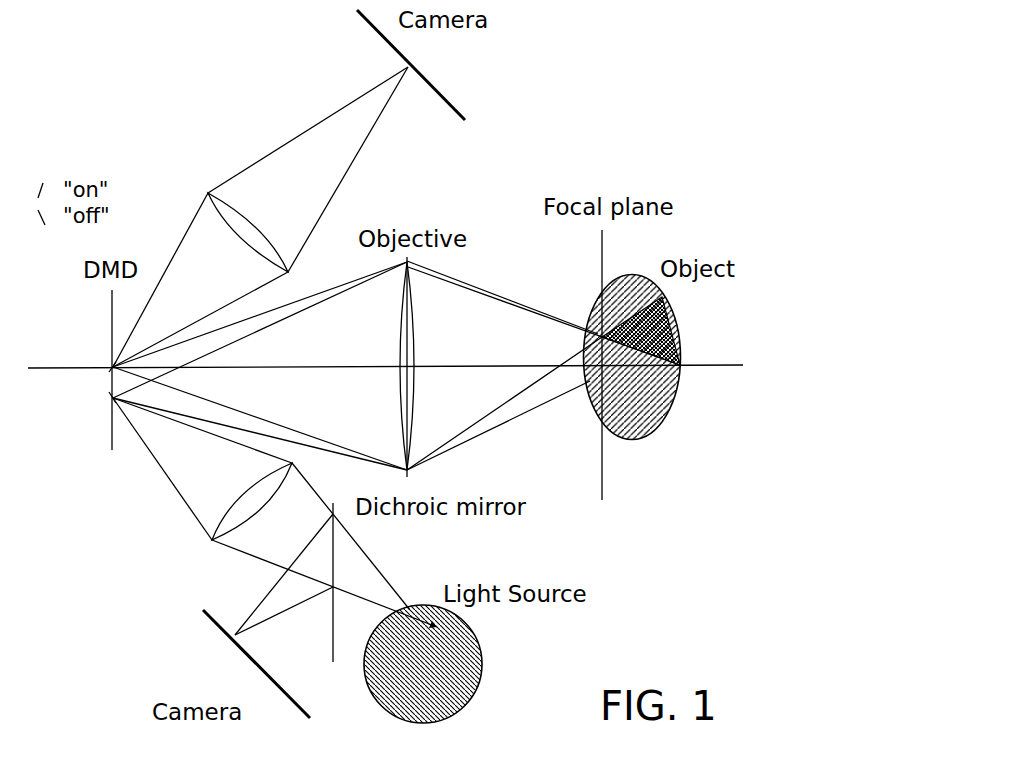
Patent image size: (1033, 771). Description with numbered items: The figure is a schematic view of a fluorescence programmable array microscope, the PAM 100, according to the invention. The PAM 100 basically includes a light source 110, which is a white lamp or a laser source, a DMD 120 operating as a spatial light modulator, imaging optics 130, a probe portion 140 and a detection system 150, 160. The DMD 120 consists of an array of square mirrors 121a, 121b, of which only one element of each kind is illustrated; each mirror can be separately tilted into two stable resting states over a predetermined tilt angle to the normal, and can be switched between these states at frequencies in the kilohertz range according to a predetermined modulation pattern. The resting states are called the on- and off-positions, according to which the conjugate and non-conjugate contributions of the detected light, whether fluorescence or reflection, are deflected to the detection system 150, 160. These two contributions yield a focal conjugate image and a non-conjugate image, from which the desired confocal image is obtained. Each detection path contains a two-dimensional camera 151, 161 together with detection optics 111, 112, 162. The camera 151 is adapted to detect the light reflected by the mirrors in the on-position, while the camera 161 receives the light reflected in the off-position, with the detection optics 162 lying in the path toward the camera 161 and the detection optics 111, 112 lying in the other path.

The fluorescence PAM 100 is at (90, 627).
The light source 110 is at (449, 664).
The detection optics 111 is at (333, 601).
The detection optics 112 is at (290, 545).
The DMD 120 is at (86, 391).
The square mirror 121a is at (225, 401).
The square mirror 121b is at (225, 331).
The imaging optics 130 is at (540, 367).
The probe portion 140 is at (660, 357).
The detection system 150 is at (358, 756).
The two-dimensional camera 151 is at (242, 664).
The detection system 160 is at (295, 121).
The two-dimensional camera 161 is at (443, 71).
The detection optics 162 is at (274, 235).